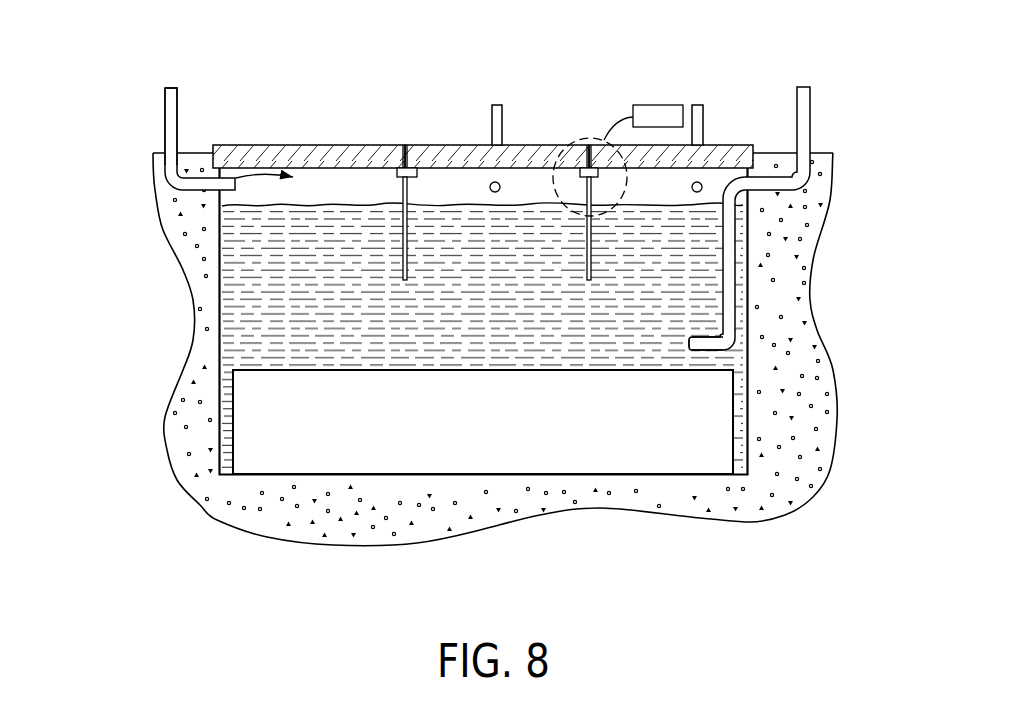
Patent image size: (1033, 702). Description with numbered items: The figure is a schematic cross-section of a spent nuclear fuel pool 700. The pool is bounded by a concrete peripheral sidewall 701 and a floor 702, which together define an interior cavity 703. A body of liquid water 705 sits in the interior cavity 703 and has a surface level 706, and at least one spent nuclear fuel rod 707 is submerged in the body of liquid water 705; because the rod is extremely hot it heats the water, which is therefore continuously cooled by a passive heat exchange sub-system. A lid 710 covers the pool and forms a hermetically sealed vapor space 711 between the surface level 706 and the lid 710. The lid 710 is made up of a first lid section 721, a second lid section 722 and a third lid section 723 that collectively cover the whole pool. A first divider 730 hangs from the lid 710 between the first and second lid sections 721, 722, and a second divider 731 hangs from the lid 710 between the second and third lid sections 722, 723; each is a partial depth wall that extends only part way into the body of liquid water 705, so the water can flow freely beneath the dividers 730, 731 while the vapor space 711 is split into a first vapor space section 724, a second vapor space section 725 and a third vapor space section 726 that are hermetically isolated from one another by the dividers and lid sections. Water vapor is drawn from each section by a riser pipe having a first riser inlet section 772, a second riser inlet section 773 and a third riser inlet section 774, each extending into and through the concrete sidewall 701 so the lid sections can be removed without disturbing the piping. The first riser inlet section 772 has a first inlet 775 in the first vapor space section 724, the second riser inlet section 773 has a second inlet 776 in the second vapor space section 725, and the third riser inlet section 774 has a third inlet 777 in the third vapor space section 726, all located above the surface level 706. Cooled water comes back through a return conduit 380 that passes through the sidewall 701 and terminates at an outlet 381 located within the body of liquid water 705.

The spent nuclear fuel pool 700 is at (158, 53).
The peripheral sidewall 701 is at (212, 315).
The floor 702 is at (210, 487).
The interior cavity 703 is at (345, 333).
The body of liquid water 705 is at (280, 305).
The surface level 706 is at (355, 207).
The spent nuclear fuel rod 707 is at (547, 433).
The lid 710 is at (524, 95).
The vapor space 711 is at (323, 191).
The first lid section 721 is at (358, 152).
The second lid section 722 is at (522, 150).
The third lid section 723 is at (712, 152).
The first vapor space section 724 is at (150, 125).
The second vapor space section 725 is at (475, 188).
The third vapor space section 726 is at (712, 180).
The first divider 730 is at (403, 242).
The second divider 731 is at (618, 140).
The first riser inlet section 772 is at (120, 123).
The second riser inlet section 773 is at (493, 132).
The third riser inlet section 774 is at (697, 110).
The first inlet 775 is at (244, 188).
The second inlet 776 is at (430, 346).
The third inlet 777 is at (797, 176).
The return conduit 380 is at (805, 245).
The outlet 381 is at (688, 347).